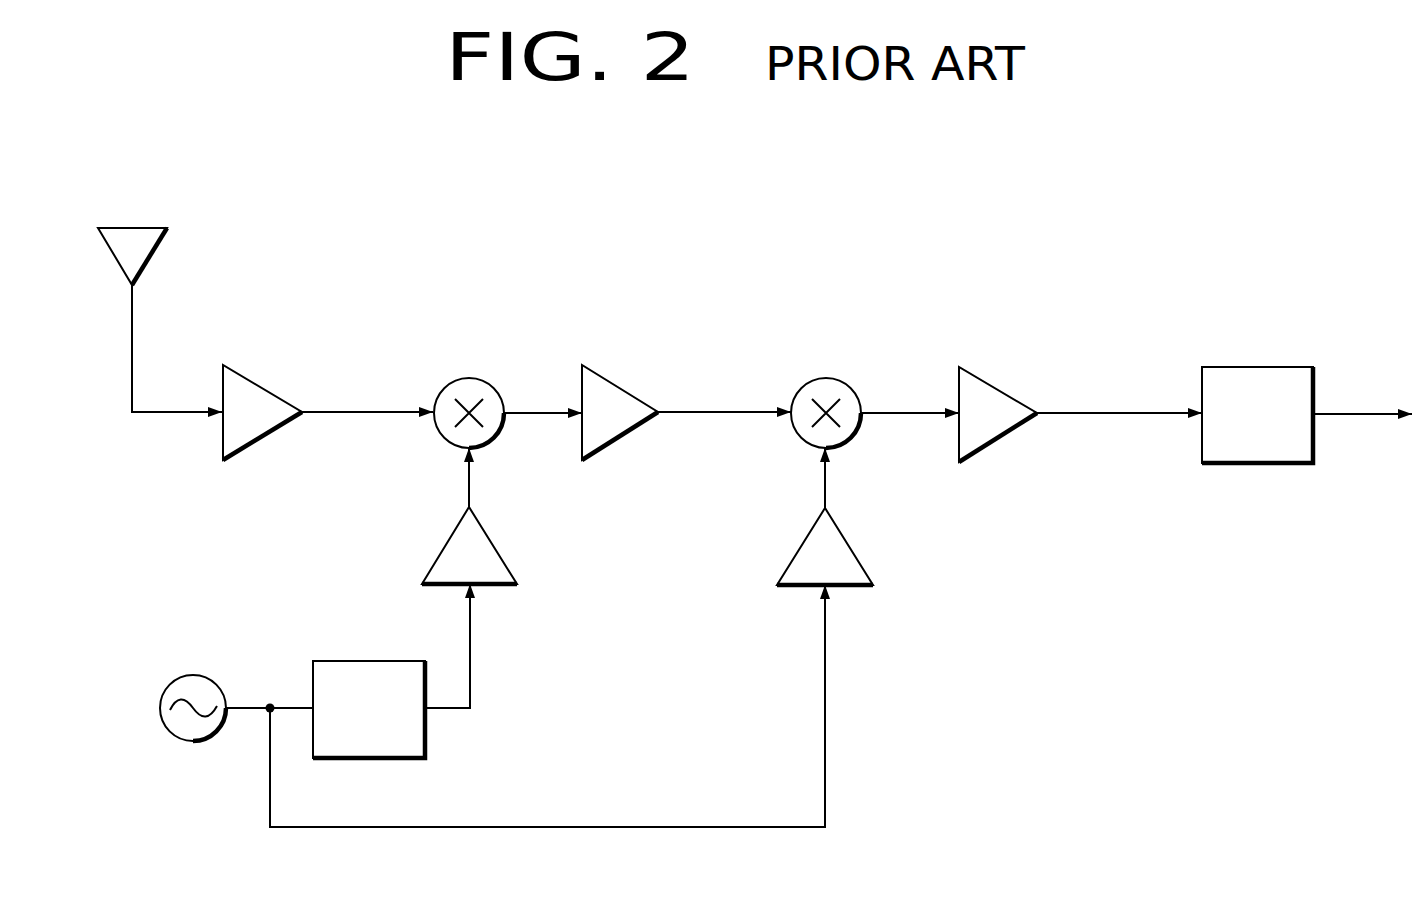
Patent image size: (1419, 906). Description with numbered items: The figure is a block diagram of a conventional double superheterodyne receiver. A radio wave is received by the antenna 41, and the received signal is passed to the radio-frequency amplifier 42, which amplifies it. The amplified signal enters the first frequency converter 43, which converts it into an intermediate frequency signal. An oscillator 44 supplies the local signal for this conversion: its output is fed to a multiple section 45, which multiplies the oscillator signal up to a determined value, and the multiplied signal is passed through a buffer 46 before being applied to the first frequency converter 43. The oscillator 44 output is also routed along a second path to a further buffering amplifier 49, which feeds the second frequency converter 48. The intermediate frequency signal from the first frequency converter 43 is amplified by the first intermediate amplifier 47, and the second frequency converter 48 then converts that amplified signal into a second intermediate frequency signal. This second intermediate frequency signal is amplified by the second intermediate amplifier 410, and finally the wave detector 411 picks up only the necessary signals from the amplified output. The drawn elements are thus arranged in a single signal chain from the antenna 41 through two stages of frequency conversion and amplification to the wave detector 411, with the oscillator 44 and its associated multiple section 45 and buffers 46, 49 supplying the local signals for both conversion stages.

The antenna 41 is at (128, 228).
The radio-frequency amplifier 42 is at (262, 386).
The first frequency converter 43 is at (472, 378).
The oscillator 44 is at (196, 676).
The multiple section 45 is at (365, 661).
The buffer 46 is at (505, 557).
The first intermediate amplifier 47 is at (622, 388).
The second frequency converter 48 is at (828, 378).
The second local amplifier 49 is at (858, 560).
The second intermediate amplifier 410 is at (992, 386).
The wave detector 411 is at (1249, 367).